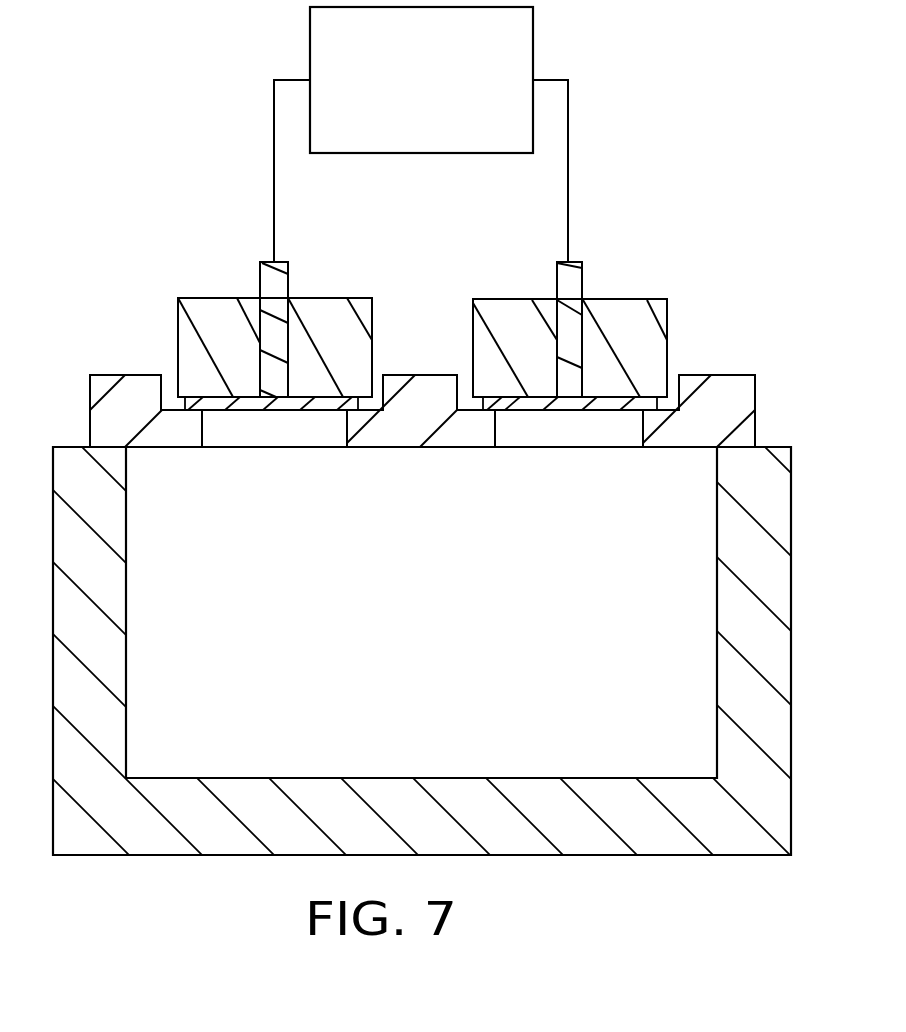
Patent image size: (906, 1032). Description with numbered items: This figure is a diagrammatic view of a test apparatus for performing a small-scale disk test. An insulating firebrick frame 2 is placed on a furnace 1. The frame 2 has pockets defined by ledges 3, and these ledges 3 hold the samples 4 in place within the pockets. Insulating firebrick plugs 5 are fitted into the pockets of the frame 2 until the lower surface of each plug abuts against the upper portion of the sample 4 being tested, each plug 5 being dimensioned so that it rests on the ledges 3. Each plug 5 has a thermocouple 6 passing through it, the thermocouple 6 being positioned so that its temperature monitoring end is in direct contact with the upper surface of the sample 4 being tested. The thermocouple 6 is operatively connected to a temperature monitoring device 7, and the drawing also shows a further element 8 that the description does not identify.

The furnace 1 is at (405, 605).
The insulating firebrick frame 2 is at (745, 390).
The ledges 3 is at (202, 427).
The samples 4 is at (550, 410).
The insulating firebrick plugs 5 is at (665, 303).
The thermocouple 6 is at (277, 288).
The temperature monitoring device 7 is at (566, 216).
The temperature monitor 8 is at (534, 47).